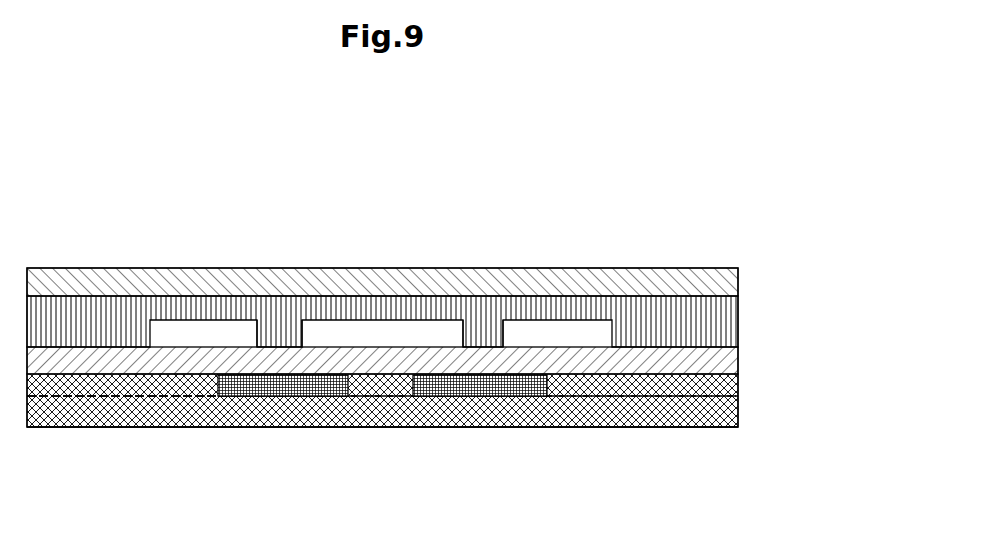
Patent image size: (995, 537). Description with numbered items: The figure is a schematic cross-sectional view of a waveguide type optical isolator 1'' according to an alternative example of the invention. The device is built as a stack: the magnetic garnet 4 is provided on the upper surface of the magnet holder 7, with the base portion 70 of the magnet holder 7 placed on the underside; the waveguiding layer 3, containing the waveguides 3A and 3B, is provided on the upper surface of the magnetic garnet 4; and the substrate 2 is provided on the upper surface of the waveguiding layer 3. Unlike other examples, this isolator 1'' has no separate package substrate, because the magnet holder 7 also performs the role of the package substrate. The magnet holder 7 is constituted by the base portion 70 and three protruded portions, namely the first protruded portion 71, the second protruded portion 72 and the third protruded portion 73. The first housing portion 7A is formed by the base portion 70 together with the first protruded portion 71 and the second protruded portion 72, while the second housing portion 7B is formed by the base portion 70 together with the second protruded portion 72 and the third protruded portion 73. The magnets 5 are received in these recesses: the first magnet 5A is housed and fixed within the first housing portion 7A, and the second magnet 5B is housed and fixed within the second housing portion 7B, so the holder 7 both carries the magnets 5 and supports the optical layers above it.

The waveguide type optical isolator 1'' is at (382, 279).
The substrate 2 is at (707, 285).
The waveguiding layer 3 is at (705, 325).
The waveguide 3A is at (283, 340).
The waveguide 3B is at (483, 345).
The magnetic garnet 4 is at (715, 366).
The magnets 5 is at (327, 218).
The first magnet 5A is at (326, 378).
The second magnet 5B is at (455, 378).
The magnet holder 7 is at (718, 403).
The base portion 70 is at (316, 406).
The first protruded portion 71 is at (110, 380).
The second protruded portion 72 is at (375, 383).
The third protruded portion 73 is at (637, 388).
The first housing portion 7A is at (262, 405).
The second housing portion 7B is at (490, 405).